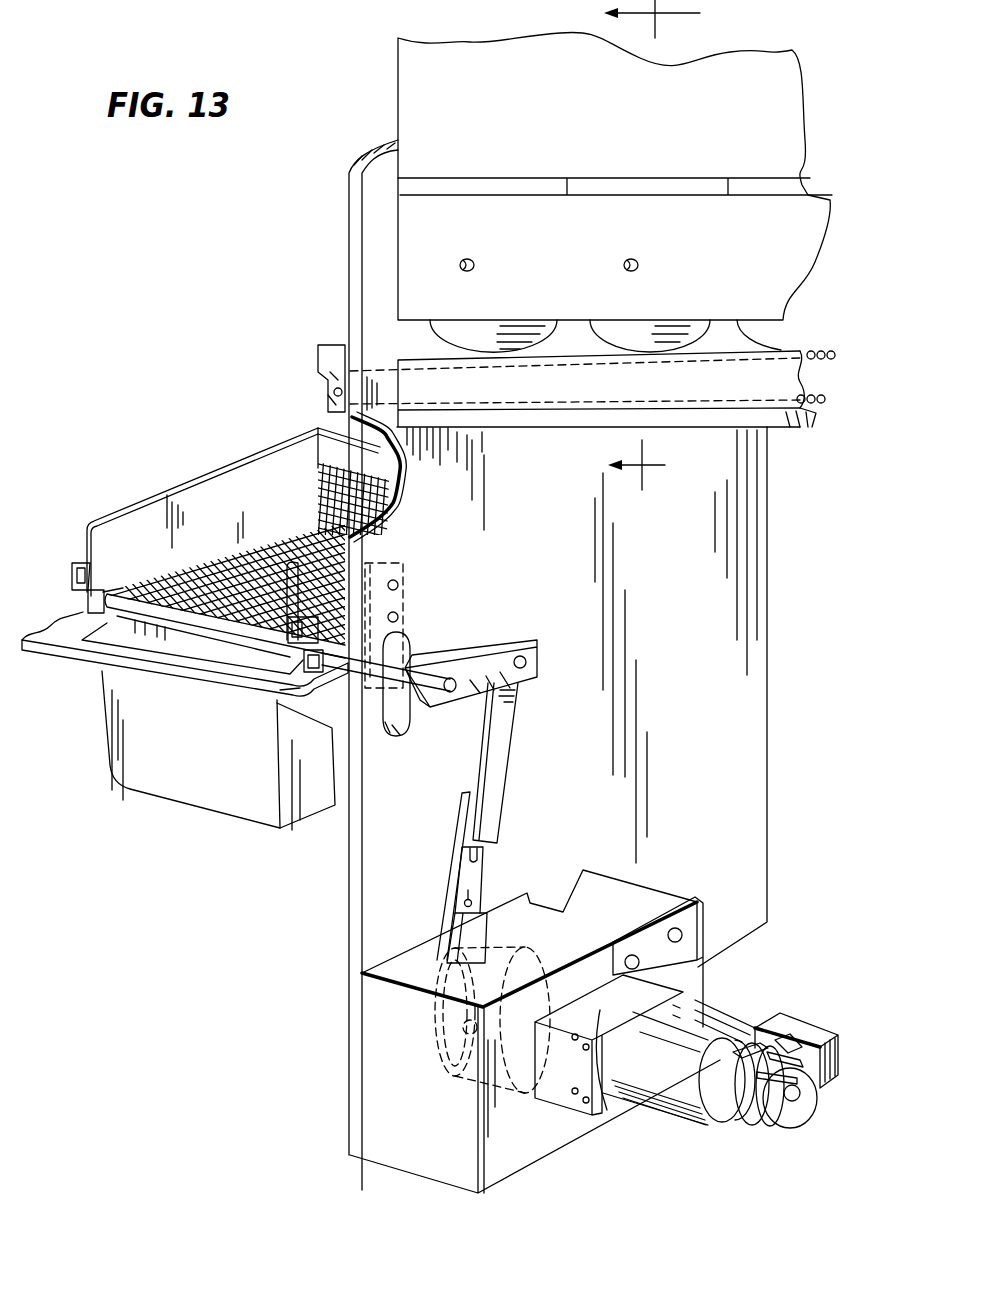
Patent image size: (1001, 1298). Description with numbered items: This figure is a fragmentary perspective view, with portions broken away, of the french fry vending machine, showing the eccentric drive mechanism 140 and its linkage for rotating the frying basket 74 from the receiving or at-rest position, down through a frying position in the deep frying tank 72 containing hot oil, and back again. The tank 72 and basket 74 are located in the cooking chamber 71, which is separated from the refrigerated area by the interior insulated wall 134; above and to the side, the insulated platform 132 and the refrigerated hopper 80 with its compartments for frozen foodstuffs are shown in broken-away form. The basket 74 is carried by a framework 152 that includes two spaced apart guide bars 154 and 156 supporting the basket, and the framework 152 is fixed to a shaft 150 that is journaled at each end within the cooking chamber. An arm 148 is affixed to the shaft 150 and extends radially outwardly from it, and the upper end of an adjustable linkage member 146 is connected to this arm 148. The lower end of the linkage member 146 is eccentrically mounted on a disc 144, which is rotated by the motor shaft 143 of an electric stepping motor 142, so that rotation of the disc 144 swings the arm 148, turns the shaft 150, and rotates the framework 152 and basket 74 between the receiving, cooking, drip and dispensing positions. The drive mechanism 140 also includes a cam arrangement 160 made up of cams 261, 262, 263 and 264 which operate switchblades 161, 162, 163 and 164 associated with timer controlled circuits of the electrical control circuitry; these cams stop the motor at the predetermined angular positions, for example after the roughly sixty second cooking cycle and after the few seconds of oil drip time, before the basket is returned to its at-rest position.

The hopper 80 is at (533, 24).
The insulated platform 132 is at (773, 428).
The interior insulated wall 134 is at (352, 214).
The cooking chamber 71 is at (261, 430).
The frying basket 74 is at (215, 470).
The guide bar 154 is at (74, 566).
The framework 152 is at (316, 690).
The guide bar 156 is at (293, 672).
The deep frying tank 72 is at (176, 795).
The shaft 150 is at (405, 668).
The arm 148 is at (490, 658).
The adjustable linkage member 146 is at (458, 872).
The disc 144 is at (452, 1058).
The motor shaft 143 is at (506, 1097).
The electric stepping motor 142 is at (667, 1112).
The drive mechanism 140 is at (750, 1143).
The cam arrangement 160 is at (796, 1030).
The switchblade 161 is at (741, 1055).
The switchblade 162 is at (776, 1042).
The switchblade 163 is at (805, 1045).
The switchblade 164 is at (800, 1075).
The cam 261 is at (720, 1108).
The cam 262 is at (740, 1120).
The cam 263 is at (768, 1124).
The cam 264 is at (793, 1113).